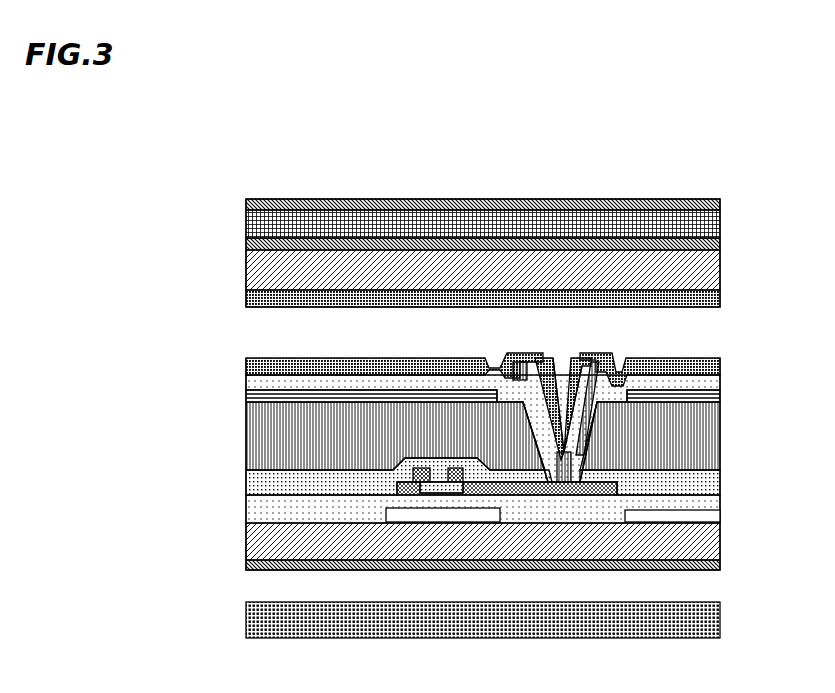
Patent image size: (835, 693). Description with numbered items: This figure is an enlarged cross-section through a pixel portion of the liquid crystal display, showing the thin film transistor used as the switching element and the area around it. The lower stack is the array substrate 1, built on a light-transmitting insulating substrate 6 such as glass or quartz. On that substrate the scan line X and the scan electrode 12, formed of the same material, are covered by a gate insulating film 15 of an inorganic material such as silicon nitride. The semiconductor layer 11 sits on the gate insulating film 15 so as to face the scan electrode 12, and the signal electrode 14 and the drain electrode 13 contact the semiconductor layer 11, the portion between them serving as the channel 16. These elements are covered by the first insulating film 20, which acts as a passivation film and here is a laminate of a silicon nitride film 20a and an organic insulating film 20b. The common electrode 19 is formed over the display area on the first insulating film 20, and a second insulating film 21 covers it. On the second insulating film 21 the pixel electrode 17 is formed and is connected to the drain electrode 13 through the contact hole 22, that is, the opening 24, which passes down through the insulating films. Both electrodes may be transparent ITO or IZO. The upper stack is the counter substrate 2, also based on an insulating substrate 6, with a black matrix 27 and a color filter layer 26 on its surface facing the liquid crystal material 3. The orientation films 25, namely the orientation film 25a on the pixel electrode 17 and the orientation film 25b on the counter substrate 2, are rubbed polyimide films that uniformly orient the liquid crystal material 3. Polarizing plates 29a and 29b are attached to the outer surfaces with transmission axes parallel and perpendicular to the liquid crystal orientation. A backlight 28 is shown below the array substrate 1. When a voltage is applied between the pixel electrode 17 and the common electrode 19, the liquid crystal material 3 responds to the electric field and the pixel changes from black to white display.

The array substrate 1 is at (745, 368).
The counter substrate 2 is at (742, 200).
The liquid crystal material 3 is at (388, 331).
The insulating substrate 6 is at (243, 222).
The semiconductor layer 11 is at (447, 488).
The scan electrode 12 is at (500, 497).
The drain electrode 13 is at (485, 486).
The signal electrode 14 is at (400, 512).
The gate insulating film 15 is at (246, 513).
The channel 16 is at (435, 459).
The pixel electrode 17 is at (620, 362).
The common electrode 19 is at (246, 395).
The first insulating film 20 is at (402, 457).
The silicon nitride film 20a is at (246, 430).
The organic insulating film 20b is at (246, 482).
The second insulating film 21 is at (246, 380).
The contact hole 22 is at (555, 372).
The opening 24 is at (615, 352).
The orientation films 25 is at (405, 375).
The orientation film 25a is at (246, 362).
The orientation film 25b is at (246, 298).
The color filter layer 26 is at (246, 273).
The black matrix 27 is at (245, 248).
The backlight 28 is at (246, 640).
The polarizing plate 29a is at (240, 573).
The polarizing plate 29b is at (302, 200).
The scan line X is at (700, 522).